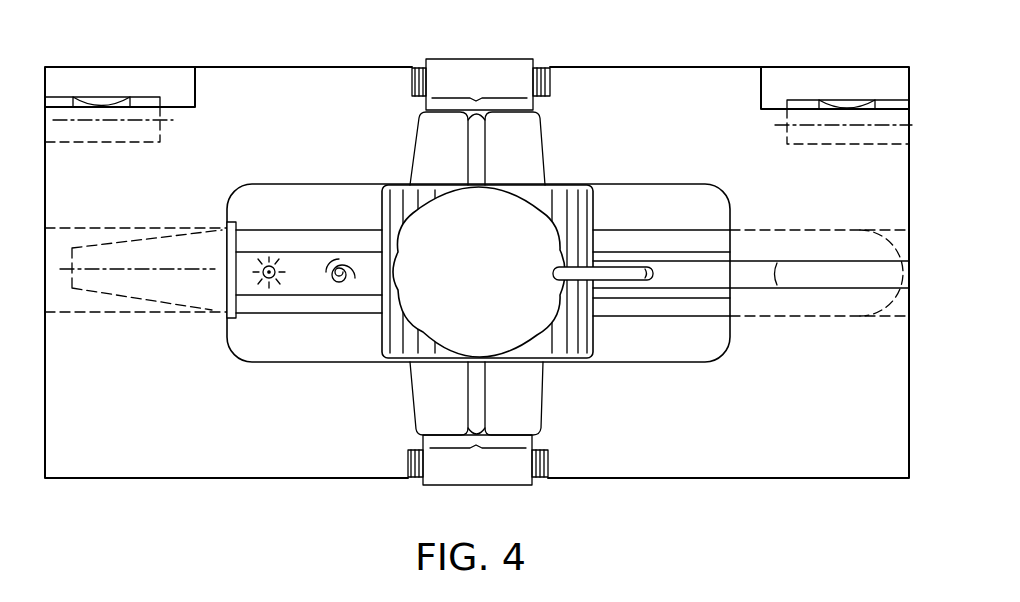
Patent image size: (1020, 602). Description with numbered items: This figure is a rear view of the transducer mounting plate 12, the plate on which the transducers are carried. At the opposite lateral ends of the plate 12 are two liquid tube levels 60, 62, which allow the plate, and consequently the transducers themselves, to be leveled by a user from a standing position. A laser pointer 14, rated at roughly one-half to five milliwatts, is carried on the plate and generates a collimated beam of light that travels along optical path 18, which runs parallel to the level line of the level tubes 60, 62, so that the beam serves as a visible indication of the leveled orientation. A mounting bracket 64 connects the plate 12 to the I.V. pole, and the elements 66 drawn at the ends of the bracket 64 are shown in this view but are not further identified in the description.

The transducer mounting plate 12 is at (820, 468).
The laser pointer 14 is at (203, 296).
The optical path 18 is at (105, 268).
The liquid tube level 60 is at (807, 100).
The liquid tube level 62 is at (143, 97).
The mounting bracket 64 is at (569, 346).
The end cap 66 is at (522, 60).